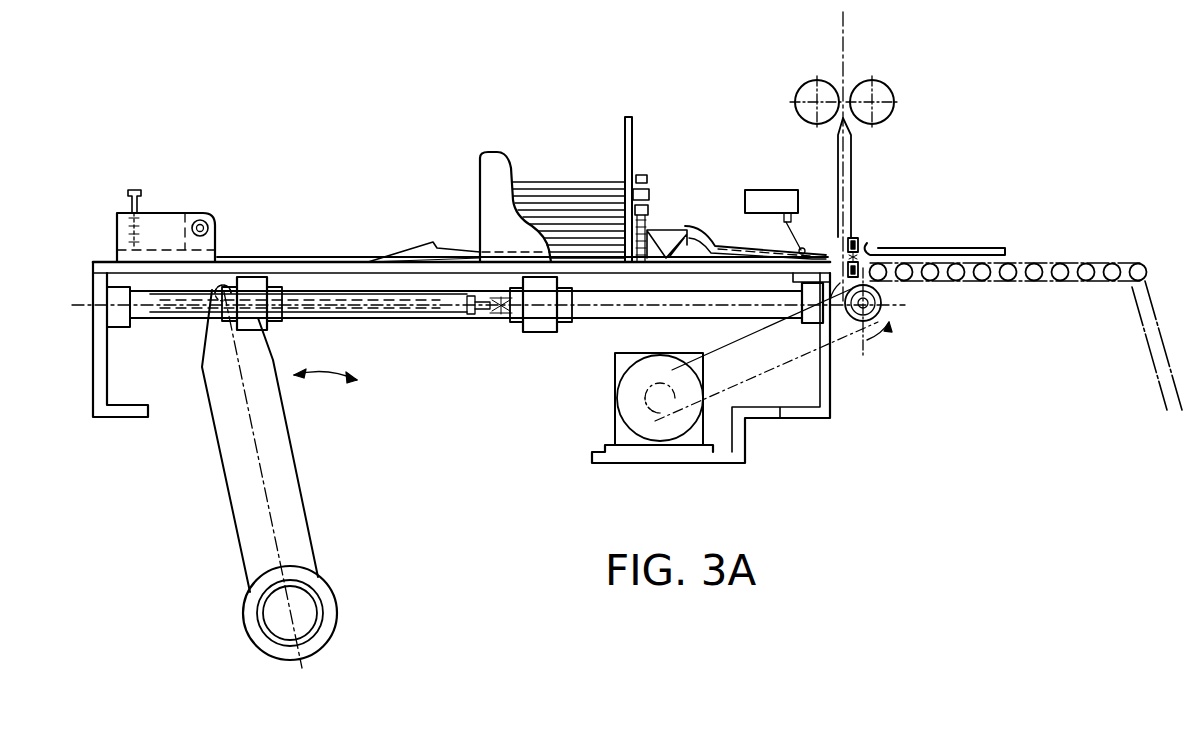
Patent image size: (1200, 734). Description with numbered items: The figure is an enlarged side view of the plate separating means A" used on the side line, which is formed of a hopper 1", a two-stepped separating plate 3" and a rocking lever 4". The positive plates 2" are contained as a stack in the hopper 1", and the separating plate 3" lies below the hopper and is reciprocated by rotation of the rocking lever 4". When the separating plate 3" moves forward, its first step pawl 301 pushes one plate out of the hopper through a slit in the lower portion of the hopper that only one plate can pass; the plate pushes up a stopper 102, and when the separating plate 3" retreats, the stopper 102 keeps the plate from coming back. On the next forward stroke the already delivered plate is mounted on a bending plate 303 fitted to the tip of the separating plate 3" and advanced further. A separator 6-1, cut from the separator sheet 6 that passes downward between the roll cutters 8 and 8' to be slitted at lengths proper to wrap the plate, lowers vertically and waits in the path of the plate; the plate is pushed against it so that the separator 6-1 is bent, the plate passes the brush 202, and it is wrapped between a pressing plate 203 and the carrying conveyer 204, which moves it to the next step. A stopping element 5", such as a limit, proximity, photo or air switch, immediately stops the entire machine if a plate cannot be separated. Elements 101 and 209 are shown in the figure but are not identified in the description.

The hopper 1 is at (478, 176).
The plate 2 is at (563, 181).
The separating plate 3 is at (258, 255).
The rocking lever 4 is at (297, 474).
The stopping element 5 is at (757, 190).
The separator 6 is at (846, 34).
The separator 6-1 is at (850, 192).
The roll cutter 8 is at (804, 87).
The roll cutter 8' is at (895, 87).
The wedge stopper 101 is at (661, 231).
The stopper 102 is at (682, 246).
The lower brush 202 is at (878, 279).
The pressing plate 203 is at (982, 248).
The carrying conveyer 204 is at (995, 284).
The detector 209 is at (858, 240).
The first step pawl 301 is at (437, 247).
The bending plate 303 is at (737, 263).
The plate separating means A is at (470, 127).